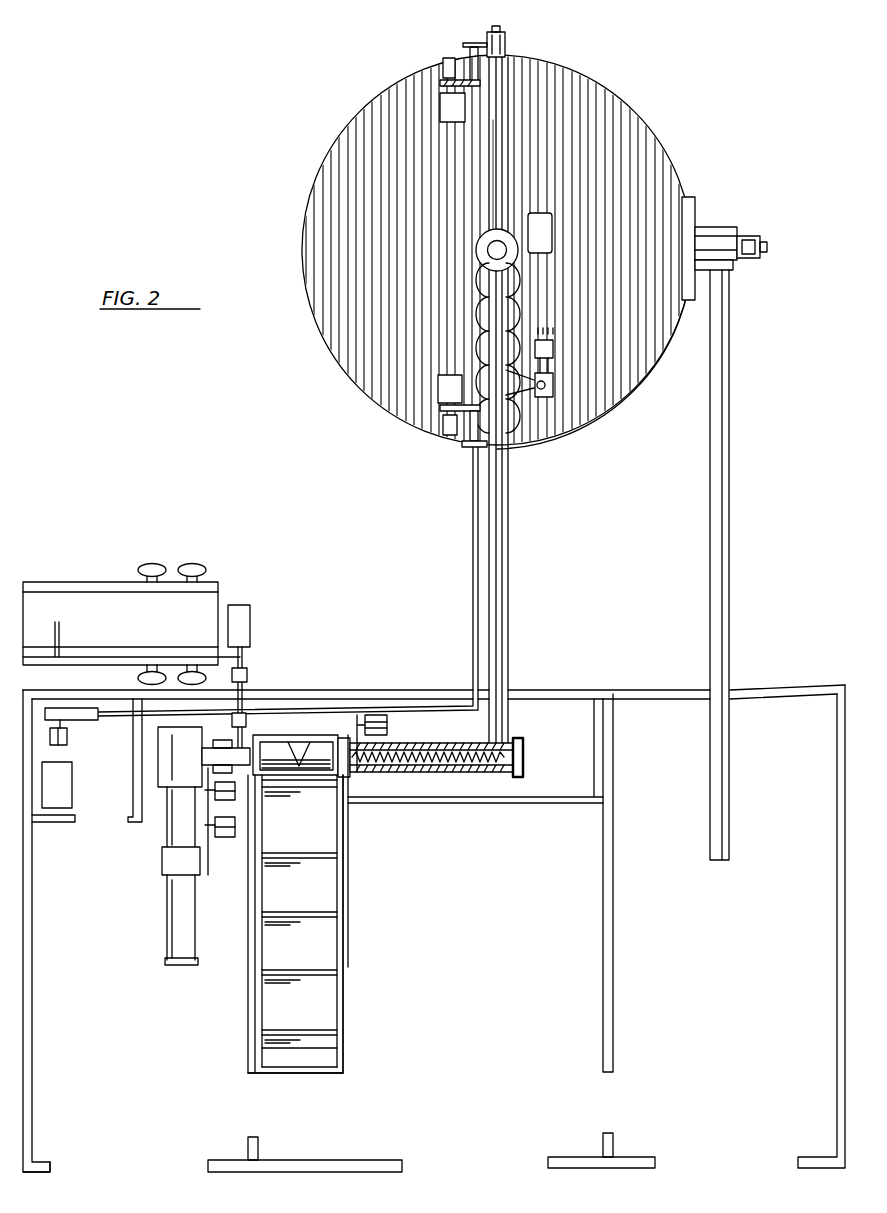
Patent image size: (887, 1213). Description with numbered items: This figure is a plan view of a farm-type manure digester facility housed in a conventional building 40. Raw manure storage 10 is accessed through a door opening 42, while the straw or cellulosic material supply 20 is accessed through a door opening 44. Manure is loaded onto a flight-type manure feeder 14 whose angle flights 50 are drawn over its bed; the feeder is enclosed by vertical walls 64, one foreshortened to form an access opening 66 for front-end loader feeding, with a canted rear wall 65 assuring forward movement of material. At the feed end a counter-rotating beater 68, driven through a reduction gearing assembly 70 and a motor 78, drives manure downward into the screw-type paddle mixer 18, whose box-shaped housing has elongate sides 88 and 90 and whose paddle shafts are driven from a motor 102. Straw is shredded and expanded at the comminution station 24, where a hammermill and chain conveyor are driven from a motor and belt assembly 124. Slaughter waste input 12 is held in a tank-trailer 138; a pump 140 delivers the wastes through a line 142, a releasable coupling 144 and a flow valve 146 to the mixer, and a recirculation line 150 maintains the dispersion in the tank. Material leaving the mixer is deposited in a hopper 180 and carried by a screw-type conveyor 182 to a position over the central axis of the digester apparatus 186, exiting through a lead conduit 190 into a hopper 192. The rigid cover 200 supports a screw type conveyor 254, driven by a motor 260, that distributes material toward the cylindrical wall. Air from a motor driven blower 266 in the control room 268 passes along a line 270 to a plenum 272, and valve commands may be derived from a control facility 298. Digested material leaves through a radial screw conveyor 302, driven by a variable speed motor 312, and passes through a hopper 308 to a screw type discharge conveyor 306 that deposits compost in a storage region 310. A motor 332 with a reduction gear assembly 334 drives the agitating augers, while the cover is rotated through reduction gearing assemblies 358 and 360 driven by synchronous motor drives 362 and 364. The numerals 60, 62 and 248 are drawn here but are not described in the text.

The raw manure storage 10 is at (481, 969).
The liquid-solid slaughter waste input 12 is at (230, 568).
The manure feeder 14 is at (368, 838).
The screw-type paddle mixer 18 is at (452, 772).
The cellulosic material supply 20 is at (126, 1003).
The comminution and expansion station 24 is at (155, 878).
The building 40 is at (562, 680).
The door opening 42 is at (402, 1162).
The door opening 44 is at (55, 1165).
The angle flights 50 is at (265, 912).
The bottom plate 60 is at (300, 1075).
The magazine housing 62 is at (248, 1000).
The vertical walls 64 is at (348, 913).
The canted rear wall 65 is at (325, 1058).
The access opening 66 is at (345, 1012).
The beater 68 is at (302, 740).
The reduction gearing assembly 70 is at (345, 740).
The motor 78 is at (387, 725).
The elongate side of mixer housing 88 is at (440, 743).
The elongate side of mixer housing 90 is at (393, 772).
The motor 102 is at (232, 800).
The motor and belt assembly 124 is at (230, 851).
The tank-trailer 138 is at (100, 590).
The pump 140 is at (250, 612).
The line 142 is at (243, 660).
The releasable coupling 144 is at (247, 675).
The flow valve 146 is at (247, 718).
The recirculation line 150 is at (142, 647).
The hopper 180 is at (523, 748).
The screw-type conveyor 182 is at (510, 540).
The digester apparatus 186 is at (322, 103).
The lead conduit 190 is at (492, 272).
The hopper 192 is at (482, 232).
The cover 200 is at (338, 250).
The slide block 248 is at (452, 106).
The screw type conveyor 254 is at (510, 145).
The motor 260 is at (505, 35).
The motor driven blower 266 is at (68, 735).
The control room 268 is at (126, 775).
The line 270 is at (612, 410).
The plenum 272 is at (690, 197).
The control facility 298 is at (60, 796).
The screw conveyor 302 is at (725, 230).
The screw type discharge conveyor 306 is at (730, 488).
The hopper 308 is at (730, 268).
The storage region 310 is at (736, 951).
The variable speed motor 312 is at (750, 240).
The motor 332 is at (553, 348).
The reduction gear assembly 334 is at (553, 384).
The reduction gearing assembly 358 is at (470, 440).
The reduction gearing assembly 360 is at (474, 45).
The synchronous motor drive 362 is at (445, 432).
The synchronous motor drive 364 is at (450, 58).